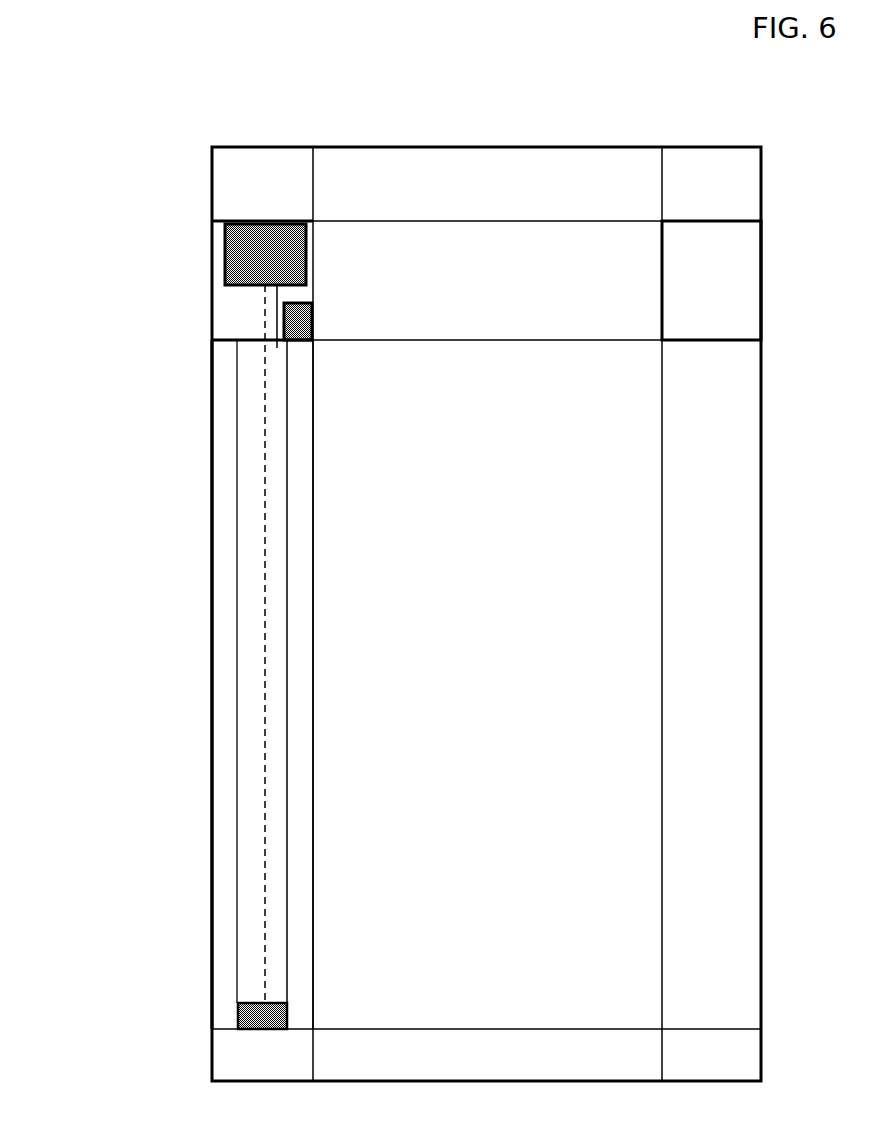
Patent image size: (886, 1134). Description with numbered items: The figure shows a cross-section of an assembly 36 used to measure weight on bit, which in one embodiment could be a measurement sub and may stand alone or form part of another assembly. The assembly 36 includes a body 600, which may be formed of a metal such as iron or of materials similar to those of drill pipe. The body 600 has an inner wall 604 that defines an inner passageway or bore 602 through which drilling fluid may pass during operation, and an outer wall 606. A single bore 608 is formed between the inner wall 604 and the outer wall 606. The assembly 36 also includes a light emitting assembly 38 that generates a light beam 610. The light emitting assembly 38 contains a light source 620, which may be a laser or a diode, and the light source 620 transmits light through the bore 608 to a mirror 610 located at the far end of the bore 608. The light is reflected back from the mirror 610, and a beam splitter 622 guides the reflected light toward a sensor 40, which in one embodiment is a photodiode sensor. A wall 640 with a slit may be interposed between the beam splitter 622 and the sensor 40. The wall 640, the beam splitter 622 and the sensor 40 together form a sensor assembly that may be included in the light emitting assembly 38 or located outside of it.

The body 600 is at (210, 179).
The bore 602 is at (548, 450).
The light source 620 is at (307, 255).
The light emitting assembly 38 is at (210, 263).
The sensor 40 is at (313, 313).
The wall 640 is at (276, 301).
The beam splitter 622 is at (240, 332).
The bore 608 is at (275, 506).
The mirror 610 is at (265, 726).
The inner wall 604 is at (313, 575).
The outer wall 606 is at (212, 605).
The assembly 36 is at (168, 506).